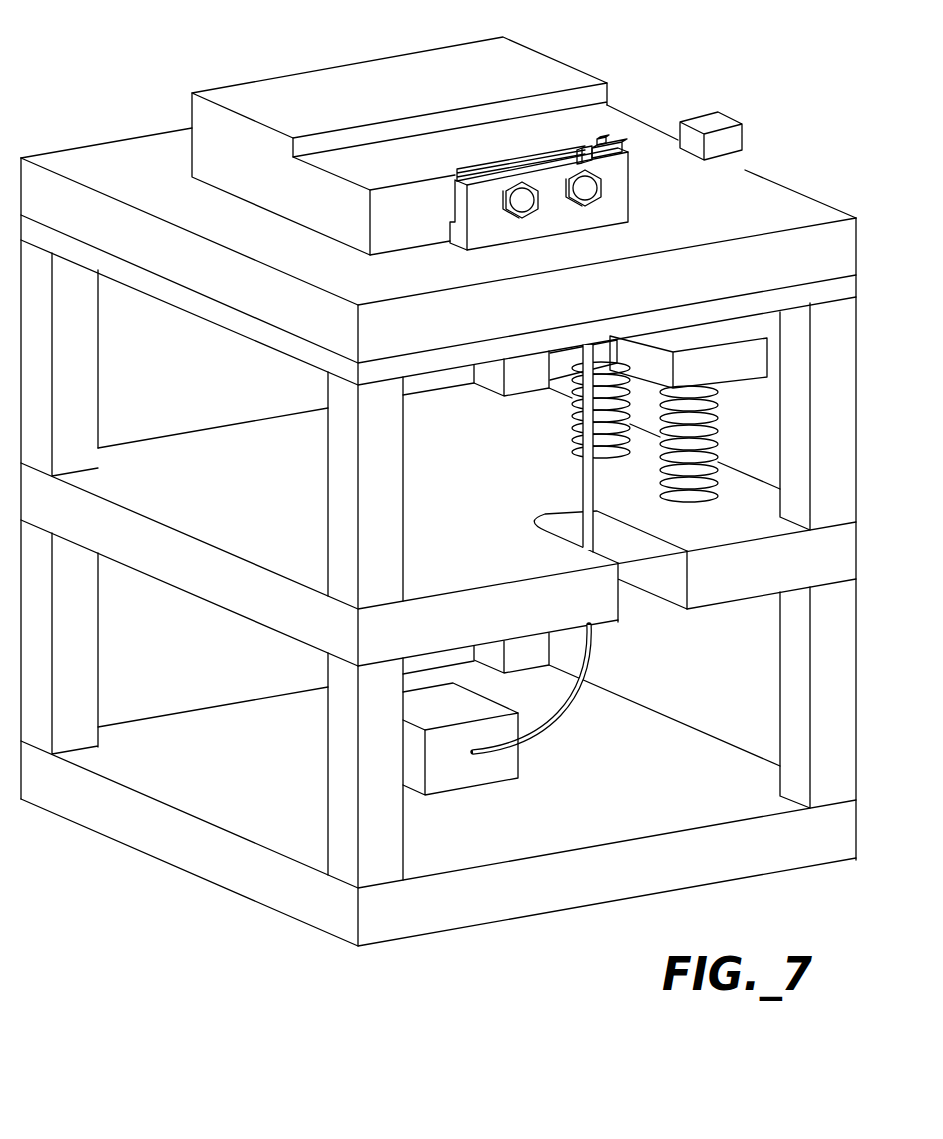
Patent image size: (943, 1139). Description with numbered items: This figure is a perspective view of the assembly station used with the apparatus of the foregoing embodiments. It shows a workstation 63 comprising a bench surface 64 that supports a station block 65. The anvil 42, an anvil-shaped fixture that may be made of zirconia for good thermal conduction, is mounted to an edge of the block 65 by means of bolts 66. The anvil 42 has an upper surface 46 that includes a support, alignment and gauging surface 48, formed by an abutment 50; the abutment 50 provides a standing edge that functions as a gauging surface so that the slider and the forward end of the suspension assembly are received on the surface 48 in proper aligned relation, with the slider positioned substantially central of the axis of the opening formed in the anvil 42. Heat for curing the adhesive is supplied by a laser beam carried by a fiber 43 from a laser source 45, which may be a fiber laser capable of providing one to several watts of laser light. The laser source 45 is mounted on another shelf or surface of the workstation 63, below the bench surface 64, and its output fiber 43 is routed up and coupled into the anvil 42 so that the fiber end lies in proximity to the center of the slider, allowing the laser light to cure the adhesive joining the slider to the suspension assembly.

The workstation 63 is at (136, 134).
The bench surface 64 is at (776, 196).
The station block 65 is at (532, 59).
The anvil 42 is at (576, 159).
The upper surface 46 is at (541, 172).
The support, alignment and gauging surface 48 is at (601, 137).
The abutment 50 is at (613, 148).
The bolts 66 is at (524, 202).
The fiber 43 is at (586, 461).
The laser source 45 is at (463, 773).